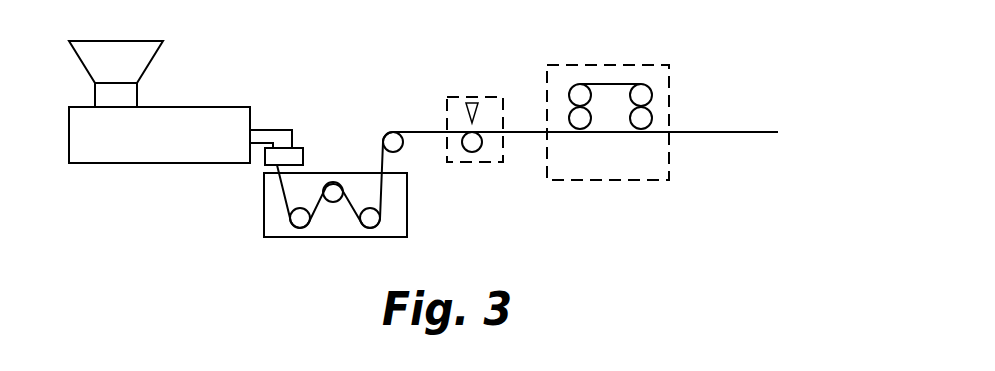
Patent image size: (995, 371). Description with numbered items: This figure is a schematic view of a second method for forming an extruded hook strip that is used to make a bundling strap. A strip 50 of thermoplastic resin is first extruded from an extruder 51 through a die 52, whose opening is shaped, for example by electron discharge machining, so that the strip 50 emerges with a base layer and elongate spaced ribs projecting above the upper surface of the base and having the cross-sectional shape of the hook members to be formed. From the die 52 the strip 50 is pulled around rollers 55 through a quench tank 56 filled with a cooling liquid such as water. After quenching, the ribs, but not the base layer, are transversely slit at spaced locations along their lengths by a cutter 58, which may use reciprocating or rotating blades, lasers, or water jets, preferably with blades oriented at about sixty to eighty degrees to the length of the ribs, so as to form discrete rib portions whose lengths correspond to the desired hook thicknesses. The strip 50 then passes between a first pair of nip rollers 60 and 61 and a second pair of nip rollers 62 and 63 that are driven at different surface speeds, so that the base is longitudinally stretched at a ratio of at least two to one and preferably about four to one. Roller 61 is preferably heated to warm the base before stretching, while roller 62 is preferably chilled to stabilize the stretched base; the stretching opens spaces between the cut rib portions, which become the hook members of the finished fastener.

The strip 50 is at (285, 188).
The extruder 51 is at (178, 113).
The die 52 is at (280, 167).
The rollers 55 is at (370, 218).
The quench tank 56 is at (398, 217).
The cutter 58 is at (468, 115).
The nip roller 60 is at (580, 118).
The nip roller 61 is at (580, 92).
The nip roller 62 is at (641, 92).
The nip roller 63 is at (643, 120).